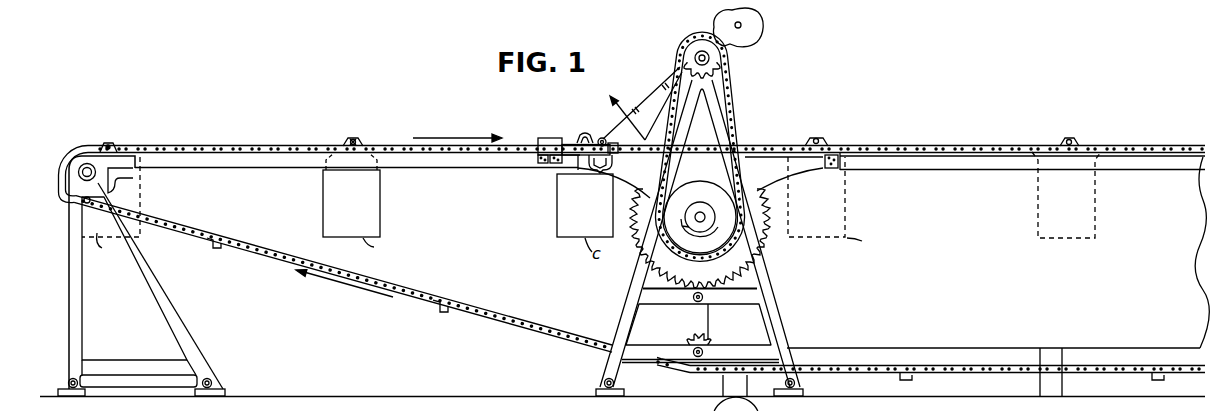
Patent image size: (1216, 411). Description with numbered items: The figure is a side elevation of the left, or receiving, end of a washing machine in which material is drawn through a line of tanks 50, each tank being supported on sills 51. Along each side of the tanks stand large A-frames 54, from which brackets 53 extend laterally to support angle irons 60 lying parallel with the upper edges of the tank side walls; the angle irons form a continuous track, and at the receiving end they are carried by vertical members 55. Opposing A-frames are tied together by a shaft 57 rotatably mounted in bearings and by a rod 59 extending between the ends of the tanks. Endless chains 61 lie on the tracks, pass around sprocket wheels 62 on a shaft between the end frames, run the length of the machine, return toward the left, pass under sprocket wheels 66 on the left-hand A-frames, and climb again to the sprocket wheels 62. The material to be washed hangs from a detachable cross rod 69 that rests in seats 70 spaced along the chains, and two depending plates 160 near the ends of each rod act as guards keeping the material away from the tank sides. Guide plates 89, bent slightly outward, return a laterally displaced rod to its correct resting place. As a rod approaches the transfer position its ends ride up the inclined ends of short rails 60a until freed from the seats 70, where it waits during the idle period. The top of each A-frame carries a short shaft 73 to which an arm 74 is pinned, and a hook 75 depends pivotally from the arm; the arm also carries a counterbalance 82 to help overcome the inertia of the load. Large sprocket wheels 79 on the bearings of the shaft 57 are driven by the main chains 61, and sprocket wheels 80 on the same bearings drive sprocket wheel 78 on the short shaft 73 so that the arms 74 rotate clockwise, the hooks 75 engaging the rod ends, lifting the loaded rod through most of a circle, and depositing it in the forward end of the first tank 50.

The tank 50 is at (963, 333).
The sill 51 is at (1050, 383).
The bracket 53 is at (773, 167).
The A-frame 54 is at (762, 283).
The vertical member 55 is at (73, 336).
The shaft 57 is at (699, 211).
The rod 59 is at (697, 302).
The angle iron 60 is at (296, 158).
The short rail 60a is at (577, 140).
The chain 61 is at (941, 151).
The sprocket wheel 62 is at (135, 183).
The sprocket wheel 66 is at (707, 340).
The cross rod 69 is at (354, 140).
The seat 70 is at (341, 143).
The short shaft 73 is at (696, 53).
The arm 74 is at (650, 100).
The hook 75 is at (600, 173).
The sprocket wheel 78 is at (714, 60).
The large sprocket wheel 79 is at (768, 206).
The sprocket wheel 80 is at (730, 220).
The counterbalance 82 is at (752, 30).
The plate 89 is at (542, 139).
The depending plate 160 is at (360, 217).